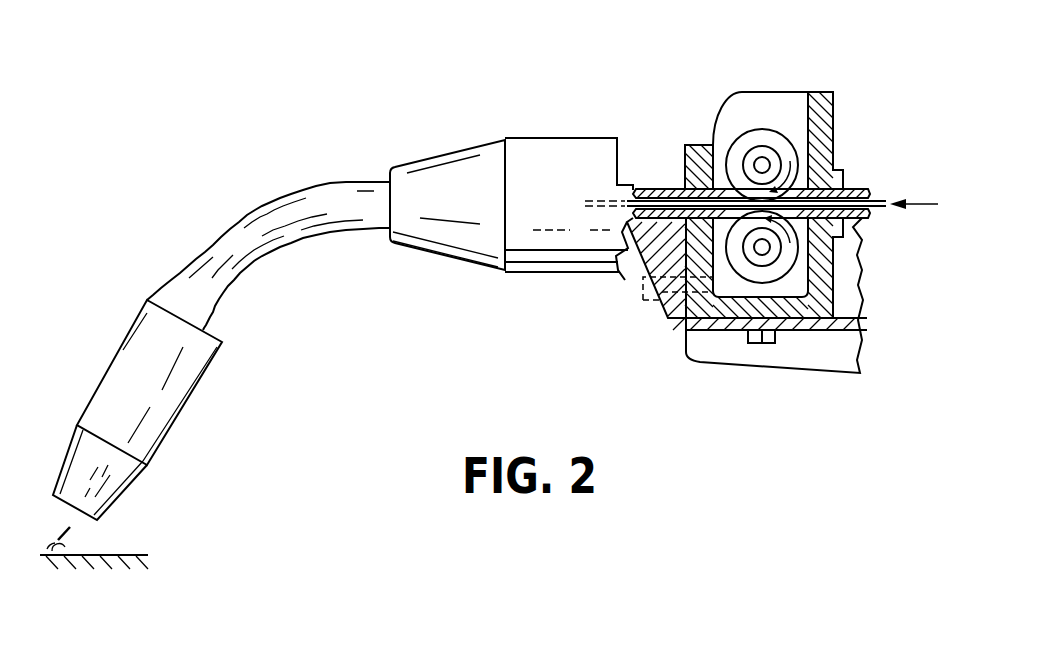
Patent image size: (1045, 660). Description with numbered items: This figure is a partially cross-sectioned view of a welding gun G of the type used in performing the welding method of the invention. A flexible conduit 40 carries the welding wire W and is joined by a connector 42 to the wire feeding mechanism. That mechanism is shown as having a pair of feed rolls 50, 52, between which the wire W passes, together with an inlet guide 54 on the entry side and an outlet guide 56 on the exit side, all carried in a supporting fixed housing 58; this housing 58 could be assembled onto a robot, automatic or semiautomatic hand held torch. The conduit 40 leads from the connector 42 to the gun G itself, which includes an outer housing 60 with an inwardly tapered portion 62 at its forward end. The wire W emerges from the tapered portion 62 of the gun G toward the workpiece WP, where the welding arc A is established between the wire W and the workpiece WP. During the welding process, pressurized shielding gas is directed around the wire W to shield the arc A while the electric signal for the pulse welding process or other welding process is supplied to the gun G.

The flexible conduit 40 is at (318, 187).
The connector 42 is at (562, 138).
The feed roll 50 is at (772, 127).
The feed roll 52 is at (773, 282).
The inlet guide 54 is at (843, 180).
The outlet guide 56 is at (657, 215).
The supporting fixed housing 58 is at (738, 312).
The outer housing 60 is at (187, 408).
The inwardly tapered portion 62 is at (138, 483).
The welding gun G is at (121, 333).
The welding wire W is at (880, 195).
The workpiece WP is at (123, 555).
The arc A is at (72, 556).